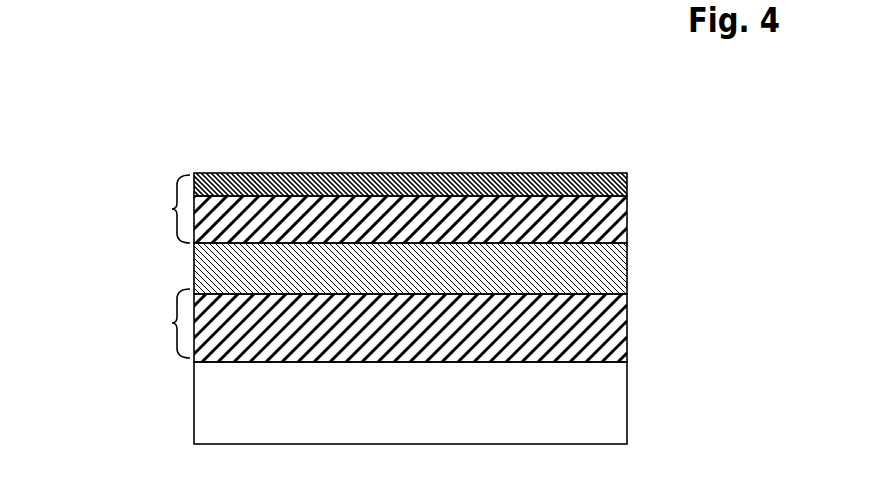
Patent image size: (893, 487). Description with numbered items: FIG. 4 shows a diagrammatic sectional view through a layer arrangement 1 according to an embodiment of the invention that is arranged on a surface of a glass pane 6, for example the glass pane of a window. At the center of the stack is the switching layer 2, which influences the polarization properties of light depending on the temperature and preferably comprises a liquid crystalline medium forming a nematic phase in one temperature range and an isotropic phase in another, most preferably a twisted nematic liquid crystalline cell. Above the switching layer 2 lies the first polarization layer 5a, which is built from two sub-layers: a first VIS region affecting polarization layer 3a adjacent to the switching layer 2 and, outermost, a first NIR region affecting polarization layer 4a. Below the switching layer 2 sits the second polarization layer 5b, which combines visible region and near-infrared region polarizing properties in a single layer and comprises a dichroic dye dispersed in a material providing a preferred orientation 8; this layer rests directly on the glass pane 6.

The layer arrangement 1 is at (276, 153).
The first polarization layer 5a is at (165, 209).
The second polarization layer 5b is at (157, 323).
The first NIR region affecting polarization layer 4a is at (630, 188).
The first VIS region affecting polarization layer 3a is at (630, 228).
The switching layer 2 is at (630, 273).
The material providing a preferred orientation 8 is at (630, 338).
The glass pane 6 is at (630, 398).